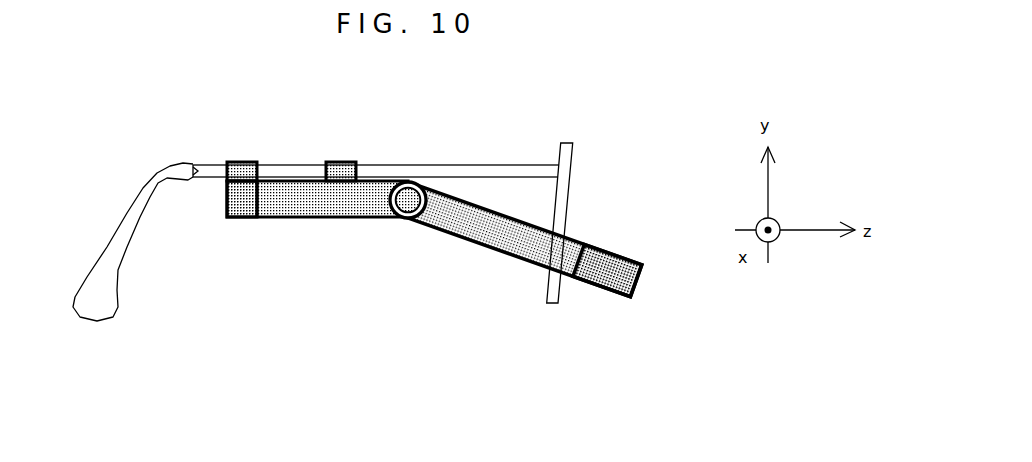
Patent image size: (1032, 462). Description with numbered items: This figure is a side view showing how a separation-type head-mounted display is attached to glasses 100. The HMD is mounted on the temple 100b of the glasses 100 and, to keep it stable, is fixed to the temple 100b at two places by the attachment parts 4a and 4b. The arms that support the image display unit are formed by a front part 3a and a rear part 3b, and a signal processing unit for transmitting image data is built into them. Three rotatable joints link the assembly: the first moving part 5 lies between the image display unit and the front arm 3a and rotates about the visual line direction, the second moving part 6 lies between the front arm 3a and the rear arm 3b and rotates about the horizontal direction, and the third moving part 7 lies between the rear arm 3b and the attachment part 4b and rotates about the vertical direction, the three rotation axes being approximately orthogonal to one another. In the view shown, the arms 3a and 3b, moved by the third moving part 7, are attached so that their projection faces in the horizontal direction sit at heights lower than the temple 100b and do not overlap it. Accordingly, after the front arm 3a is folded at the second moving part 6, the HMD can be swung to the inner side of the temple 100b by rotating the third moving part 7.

The third moving part 7 is at (243, 202).
The attachment part 4b is at (244, 162).
The attachment part 4a is at (344, 162).
The temple 100b is at (439, 165).
The glasses 100 is at (578, 162).
The rear part of arm 3b is at (308, 205).
The front part of arm 3a is at (498, 232).
The second moving part 6 is at (410, 197).
The first moving part 5 is at (620, 272).